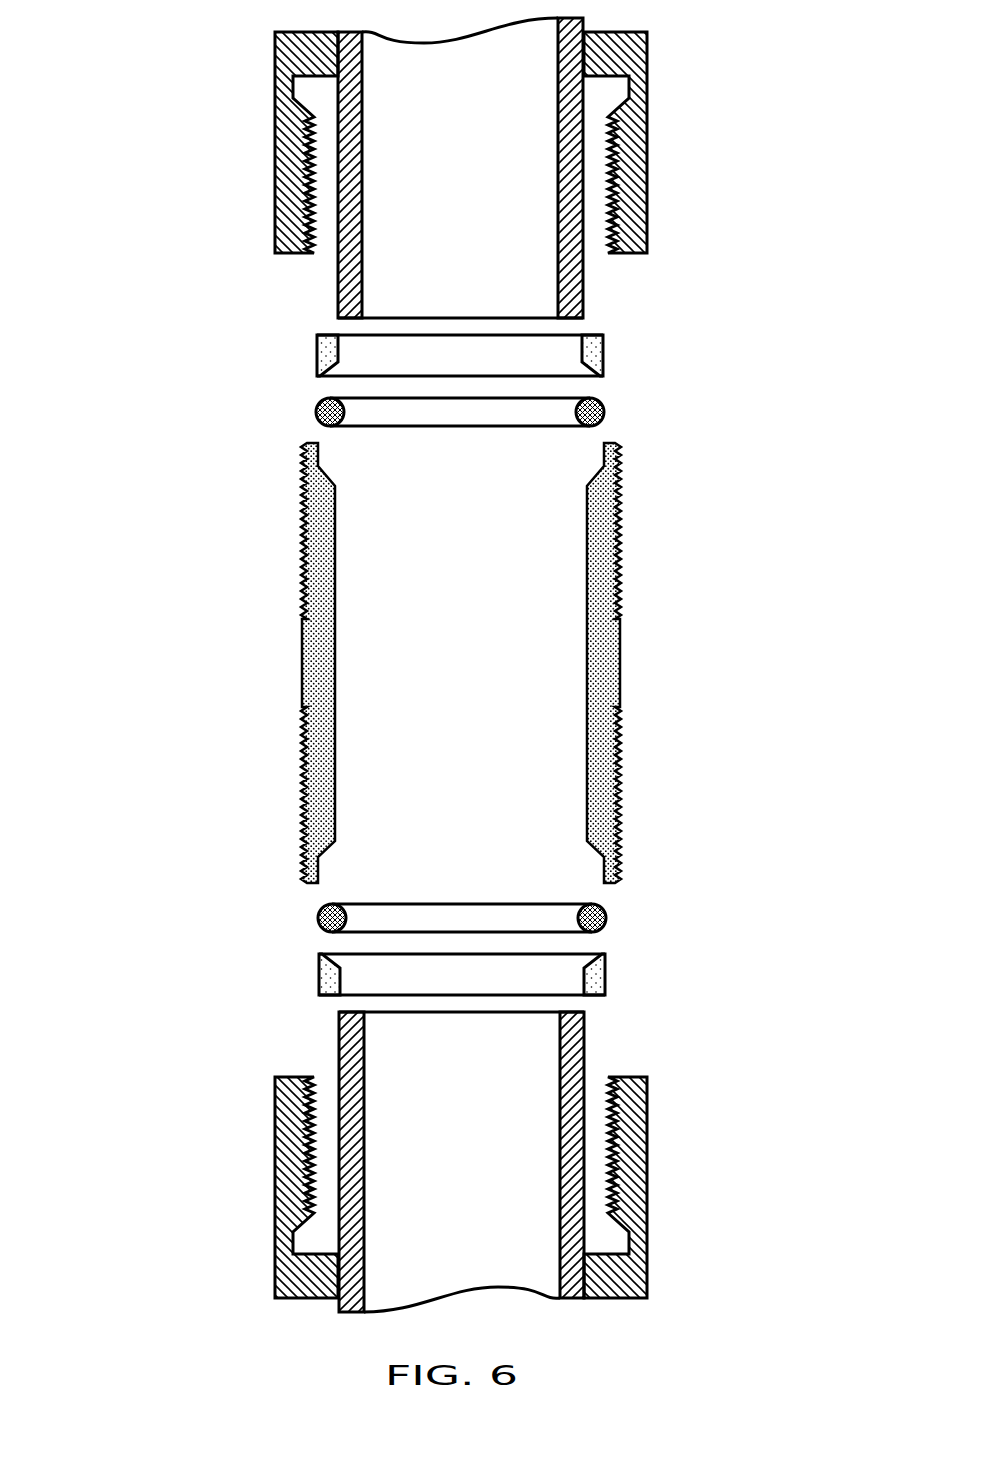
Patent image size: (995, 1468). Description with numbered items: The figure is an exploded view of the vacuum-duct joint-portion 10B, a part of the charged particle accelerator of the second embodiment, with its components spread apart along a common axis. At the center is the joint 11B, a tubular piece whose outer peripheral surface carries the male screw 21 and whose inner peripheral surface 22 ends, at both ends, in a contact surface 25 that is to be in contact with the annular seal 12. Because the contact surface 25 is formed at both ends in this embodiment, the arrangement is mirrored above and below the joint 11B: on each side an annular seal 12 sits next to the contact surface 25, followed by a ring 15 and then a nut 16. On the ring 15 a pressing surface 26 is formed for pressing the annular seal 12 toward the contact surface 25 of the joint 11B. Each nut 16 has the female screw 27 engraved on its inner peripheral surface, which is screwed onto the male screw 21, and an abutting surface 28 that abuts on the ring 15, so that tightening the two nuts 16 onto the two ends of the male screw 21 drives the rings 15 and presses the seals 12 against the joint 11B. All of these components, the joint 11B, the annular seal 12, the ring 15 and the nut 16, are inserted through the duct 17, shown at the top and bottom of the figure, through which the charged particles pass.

The vacuum-duct joint-portion 10B is at (123, 132).
The joint 11B is at (829, 440).
The annular seal 12 is at (607, 409).
The ring 15 is at (605, 350).
The nut 16 is at (823, 23).
The duct 17 is at (587, 292).
The male screw 21 is at (620, 557).
The inner peripheral surface 22 is at (625, 503).
The contact surface 25 is at (697, 441).
The pressing surface 26 is at (596, 377).
The female screw 27 is at (645, 192).
The abutting surface 28 is at (635, 100).